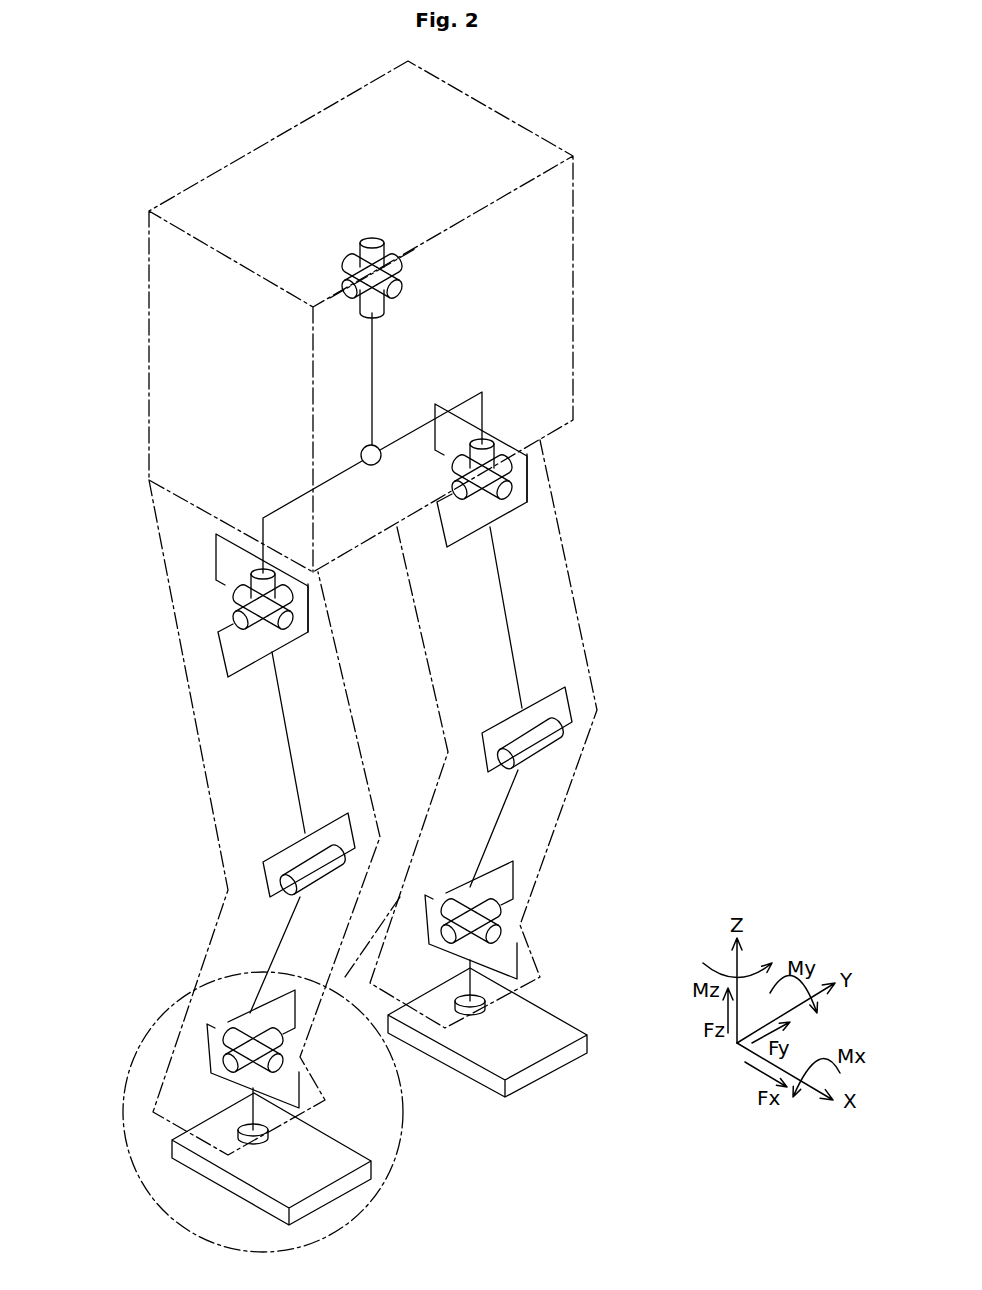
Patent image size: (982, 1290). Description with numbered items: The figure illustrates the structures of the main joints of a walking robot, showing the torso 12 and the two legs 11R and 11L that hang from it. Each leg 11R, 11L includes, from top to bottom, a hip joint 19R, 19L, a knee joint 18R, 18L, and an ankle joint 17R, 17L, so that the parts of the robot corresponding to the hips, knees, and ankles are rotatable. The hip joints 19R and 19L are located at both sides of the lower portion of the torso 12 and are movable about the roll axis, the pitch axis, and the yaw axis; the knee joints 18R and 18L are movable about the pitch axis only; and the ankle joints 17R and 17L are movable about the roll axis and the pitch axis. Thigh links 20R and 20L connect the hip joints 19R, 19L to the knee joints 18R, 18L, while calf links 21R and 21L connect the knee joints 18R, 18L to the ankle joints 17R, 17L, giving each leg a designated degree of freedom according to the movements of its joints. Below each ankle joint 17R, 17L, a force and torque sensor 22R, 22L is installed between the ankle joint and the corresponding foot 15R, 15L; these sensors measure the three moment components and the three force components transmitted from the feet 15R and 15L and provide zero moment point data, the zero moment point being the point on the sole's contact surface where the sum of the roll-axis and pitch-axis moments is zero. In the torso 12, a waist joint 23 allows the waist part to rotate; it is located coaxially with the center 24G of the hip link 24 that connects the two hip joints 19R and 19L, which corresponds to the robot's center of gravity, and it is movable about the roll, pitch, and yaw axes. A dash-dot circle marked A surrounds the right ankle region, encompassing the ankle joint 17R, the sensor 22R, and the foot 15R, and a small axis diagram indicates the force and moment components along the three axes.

The torso 12 is at (573, 315).
The waist joint 23 is at (363, 241).
The hip link 24 is at (416, 430).
The center of hip link 24G is at (361, 452).
The hip joint 19L is at (507, 470).
The hip joint 19R is at (242, 590).
The thigh link 20L is at (507, 607).
The thigh link 20R is at (280, 700).
The knee joint 18L is at (537, 743).
The knee joint 18R is at (290, 872).
The calf link 21L is at (507, 808).
The calf link 21R is at (278, 950).
The ankle joint 17L is at (493, 915).
The ankle joint 17R is at (208, 1025).
The force and torque sensor 22L is at (485, 998).
The force and torque sensor 22R is at (232, 1142).
The foot 15L is at (562, 1057).
The foot 15R is at (347, 1177).
The leg 11L is at (587, 675).
The leg 11R is at (210, 790).
The region A is at (130, 1120).